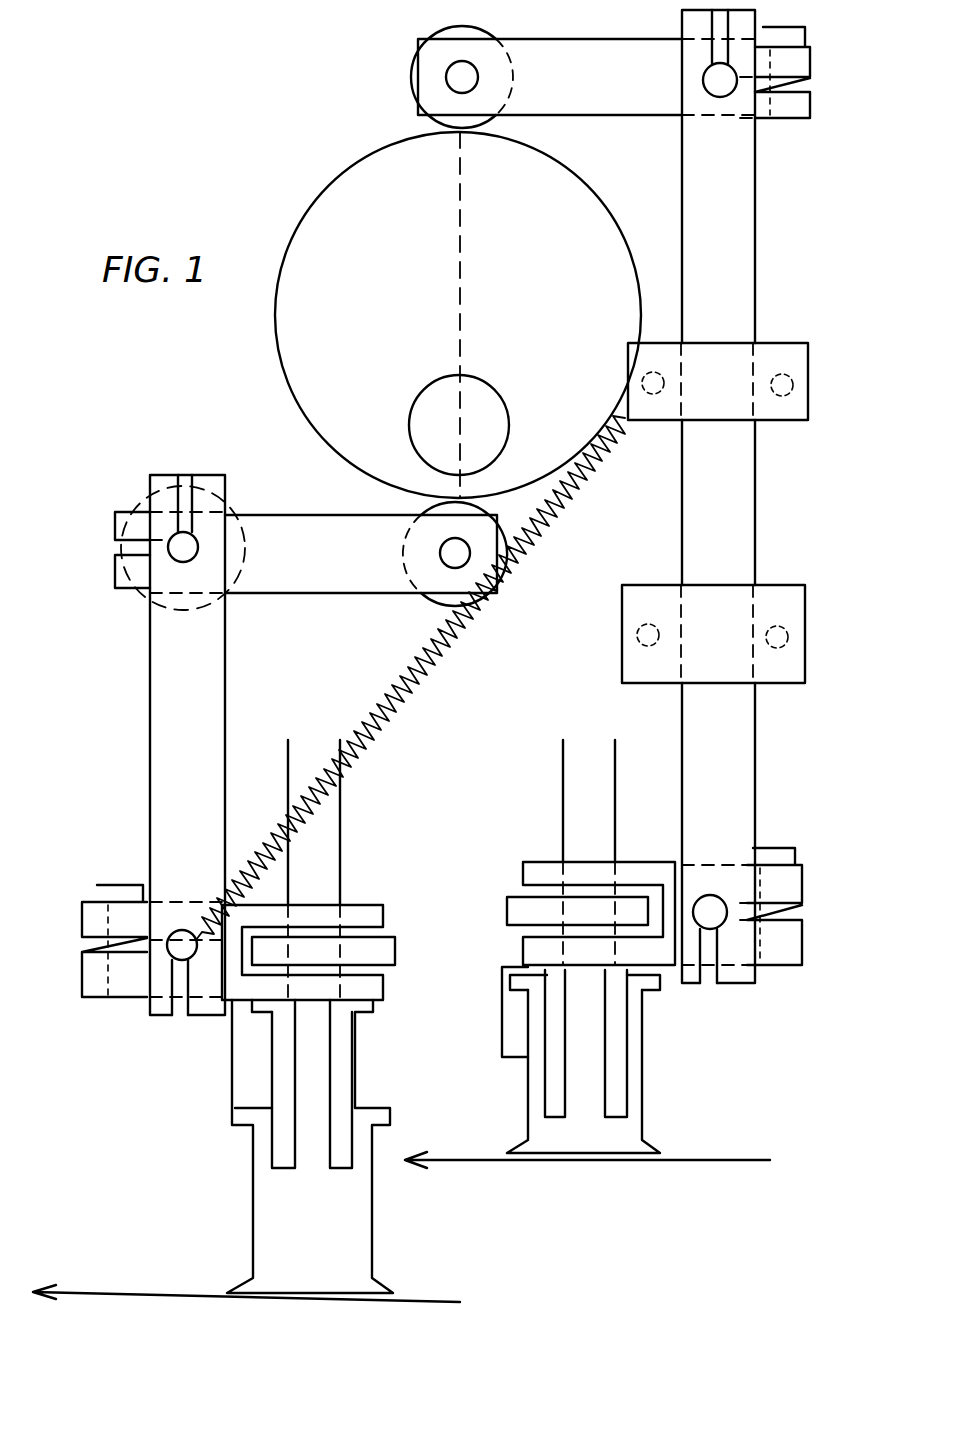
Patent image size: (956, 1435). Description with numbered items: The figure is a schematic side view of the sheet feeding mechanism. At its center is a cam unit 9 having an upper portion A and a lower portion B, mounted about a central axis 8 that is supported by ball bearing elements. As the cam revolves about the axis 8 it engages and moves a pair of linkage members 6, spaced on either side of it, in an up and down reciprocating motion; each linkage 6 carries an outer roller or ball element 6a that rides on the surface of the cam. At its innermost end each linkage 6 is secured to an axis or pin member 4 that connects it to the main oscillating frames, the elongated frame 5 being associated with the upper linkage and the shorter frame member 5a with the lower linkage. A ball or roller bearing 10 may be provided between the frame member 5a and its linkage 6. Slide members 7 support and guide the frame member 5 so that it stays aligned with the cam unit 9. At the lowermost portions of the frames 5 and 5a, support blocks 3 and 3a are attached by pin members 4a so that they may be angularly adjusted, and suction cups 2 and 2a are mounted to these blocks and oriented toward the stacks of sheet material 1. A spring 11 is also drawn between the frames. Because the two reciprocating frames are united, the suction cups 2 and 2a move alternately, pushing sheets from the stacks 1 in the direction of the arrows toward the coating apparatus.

The stacks of sheet material 1 is at (401, 1213).
The suction cup 2 is at (642, 1050).
The suction cup 2a is at (255, 1194).
The support block 3 is at (535, 862).
The support block 3a is at (407, 867).
The axis or pin member 4 is at (198, 546).
The pin member 4a is at (168, 958).
The main oscillating frame 5 is at (752, 726).
The frame member 5a is at (150, 690).
The linkage member 6 is at (618, 118).
The outer roller or ball element 6a is at (440, 38).
The slide member 7 is at (715, 500).
The central axis 8 is at (412, 402).
The cam unit 9 is at (327, 183).
The ball or roller bearing 10 is at (146, 505).
The tension spring 11 is at (400, 690).
The upper portion A is at (718, 98).
The lower portion B is at (470, 495).